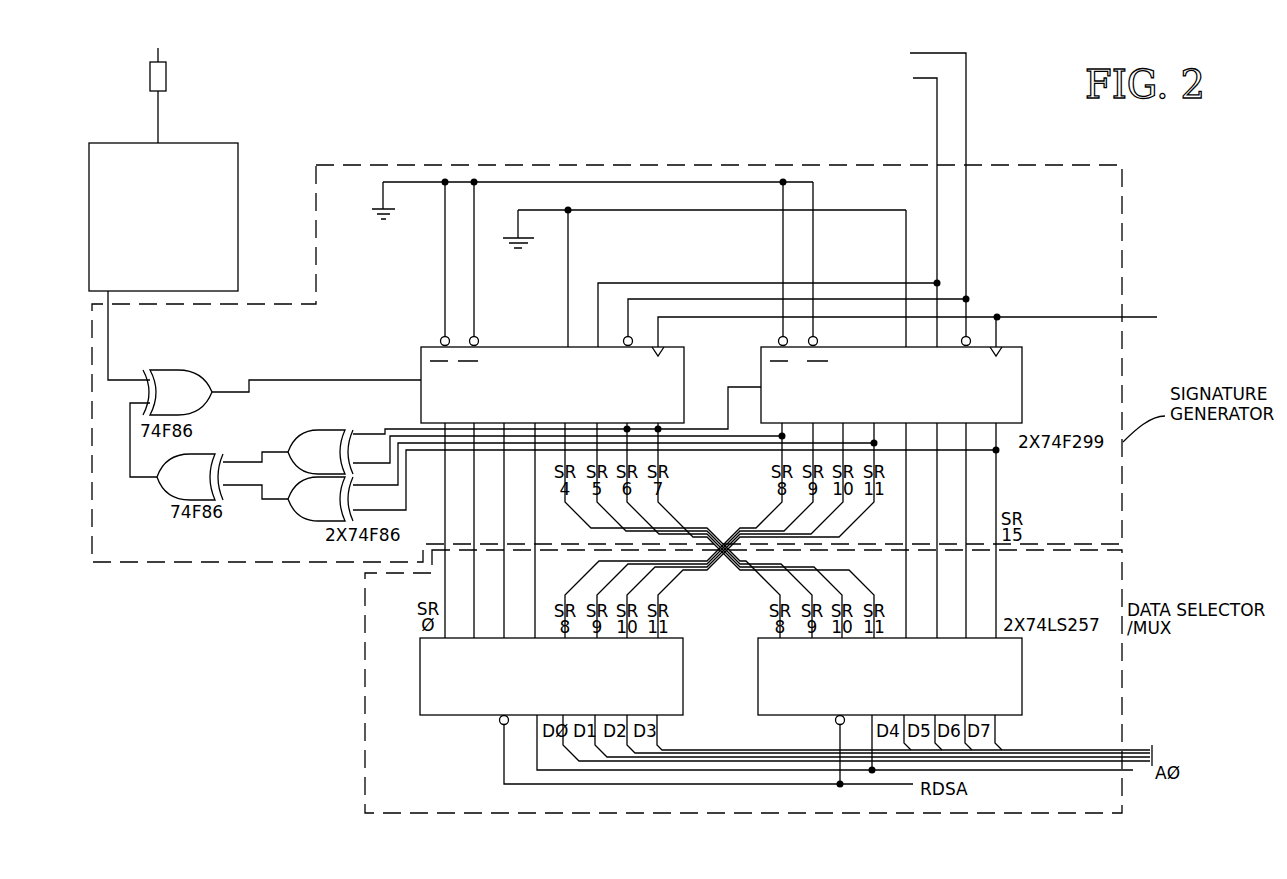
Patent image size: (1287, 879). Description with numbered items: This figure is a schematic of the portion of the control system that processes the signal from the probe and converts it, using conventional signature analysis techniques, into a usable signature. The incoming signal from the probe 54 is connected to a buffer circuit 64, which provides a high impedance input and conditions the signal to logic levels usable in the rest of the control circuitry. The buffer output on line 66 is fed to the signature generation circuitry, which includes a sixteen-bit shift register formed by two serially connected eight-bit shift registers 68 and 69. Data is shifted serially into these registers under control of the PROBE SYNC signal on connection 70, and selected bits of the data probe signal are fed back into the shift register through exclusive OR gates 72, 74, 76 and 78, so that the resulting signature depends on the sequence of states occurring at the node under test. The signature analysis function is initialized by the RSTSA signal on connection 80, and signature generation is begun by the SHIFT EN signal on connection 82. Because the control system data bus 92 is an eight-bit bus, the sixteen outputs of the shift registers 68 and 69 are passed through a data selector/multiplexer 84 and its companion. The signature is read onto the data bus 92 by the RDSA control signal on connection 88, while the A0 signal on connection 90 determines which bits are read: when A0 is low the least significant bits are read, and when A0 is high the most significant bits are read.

The probe 54 is at (162, 53).
The buffer circuit 64 is at (238, 236).
The line 66 is at (108, 340).
The 8-bit shift register 68 is at (420, 349).
The 8-bit shift register 69 is at (1023, 372).
The connection 70 is at (1143, 317).
The exclusive OR gate 72 is at (318, 430).
The exclusive OR gate 74 is at (297, 514).
The exclusive OR gate 76 is at (220, 455).
The exclusive OR gate 78 is at (185, 369).
The connection 80 is at (967, 130).
The connection 82 is at (937, 101).
The data selector/multiplexer 84 is at (420, 706).
The connection 88 is at (504, 746).
The connection 90 is at (1133, 772).
The data bus 92 is at (1142, 756).